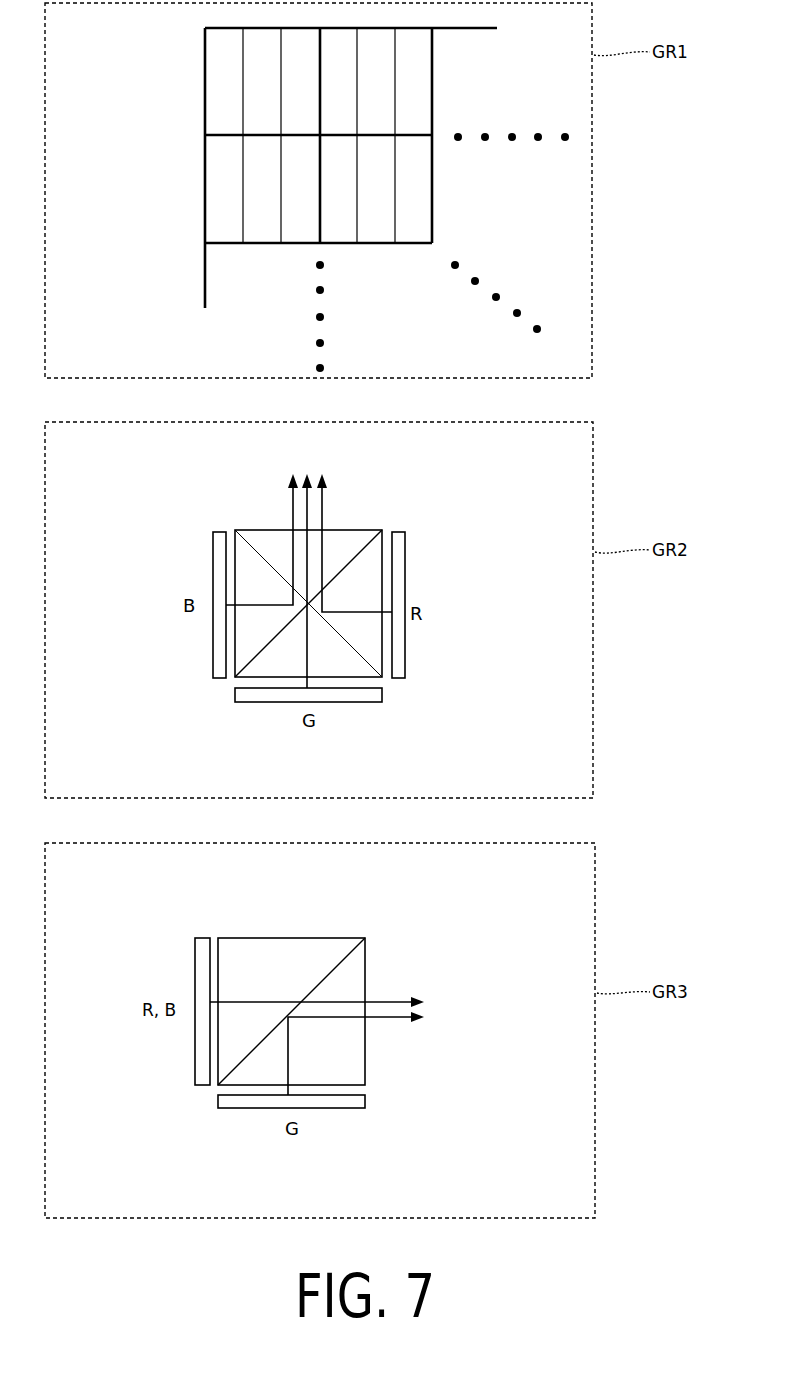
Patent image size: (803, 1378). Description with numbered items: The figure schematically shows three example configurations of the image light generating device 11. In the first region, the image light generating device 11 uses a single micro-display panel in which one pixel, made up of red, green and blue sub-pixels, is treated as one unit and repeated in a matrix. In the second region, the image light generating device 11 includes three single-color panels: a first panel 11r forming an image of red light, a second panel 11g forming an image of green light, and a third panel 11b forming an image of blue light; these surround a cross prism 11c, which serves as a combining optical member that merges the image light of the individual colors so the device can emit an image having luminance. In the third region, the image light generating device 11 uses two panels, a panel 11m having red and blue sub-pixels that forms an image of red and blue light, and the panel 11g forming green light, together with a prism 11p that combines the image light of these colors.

The image light generating device 11 is at (192, 52).
The third panel 11b is at (213, 566).
The cross prism 11c is at (348, 540).
The first panel 11r is at (405, 583).
The second panel 11g is at (371, 702).
The prism 11p is at (277, 950).
The panel 11m is at (200, 1058).